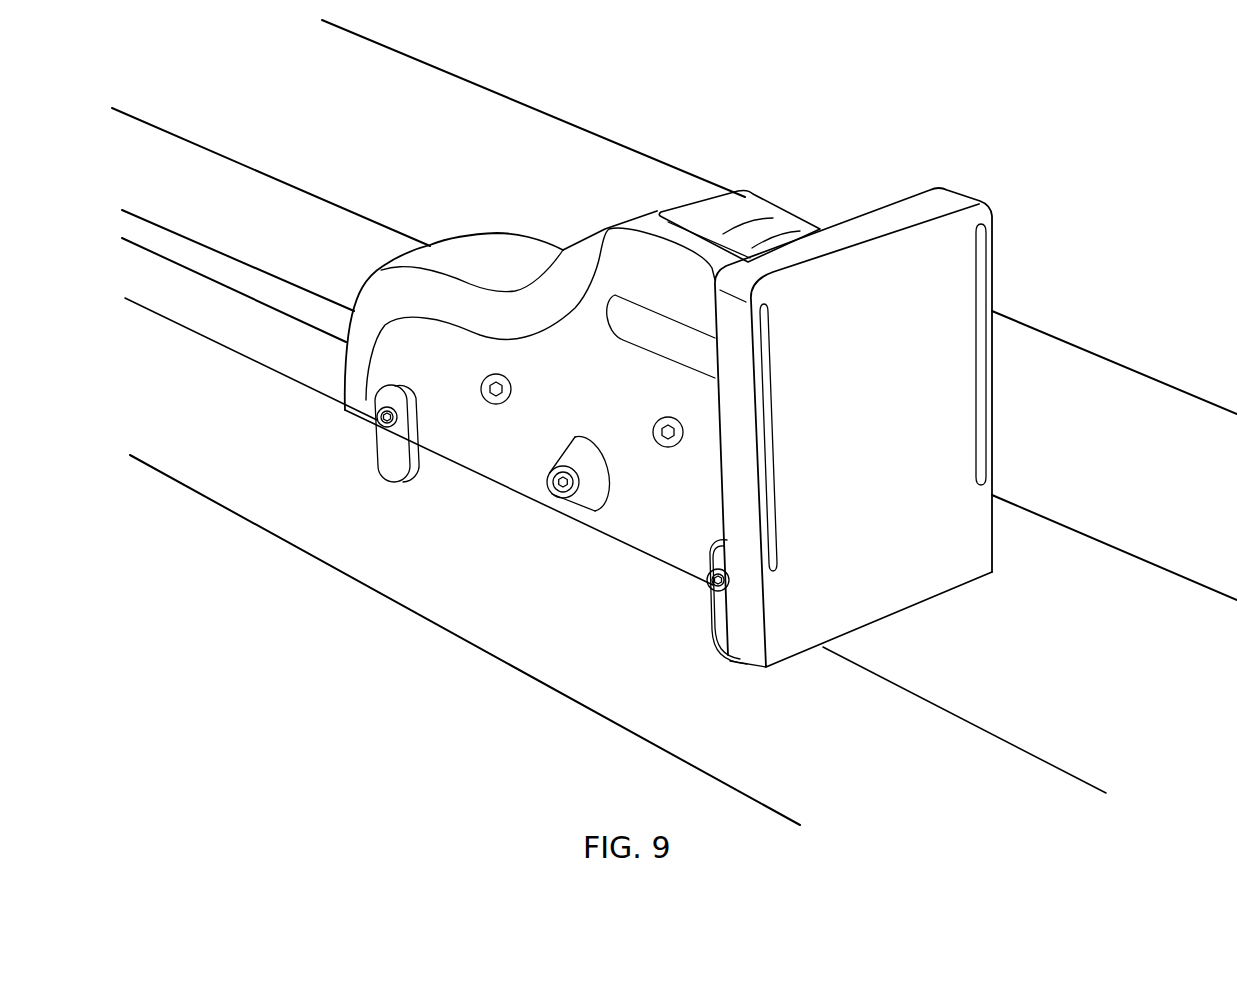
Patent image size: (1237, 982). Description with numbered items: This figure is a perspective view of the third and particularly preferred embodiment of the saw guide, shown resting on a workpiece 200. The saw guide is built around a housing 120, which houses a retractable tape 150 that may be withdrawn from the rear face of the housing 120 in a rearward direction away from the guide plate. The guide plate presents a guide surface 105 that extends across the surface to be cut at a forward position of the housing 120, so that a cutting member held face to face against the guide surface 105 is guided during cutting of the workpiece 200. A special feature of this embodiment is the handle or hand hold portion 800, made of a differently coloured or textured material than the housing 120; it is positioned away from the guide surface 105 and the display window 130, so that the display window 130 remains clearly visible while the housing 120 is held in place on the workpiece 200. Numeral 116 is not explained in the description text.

The guide surface 105 is at (787, 648).
The roller 116 is at (772, 540).
The housing 120 is at (656, 508).
The display window 130 is at (746, 213).
The retractable tape 150 is at (295, 320).
The workpiece 200 is at (335, 540).
The handle or hand hold portion 800 is at (464, 322).